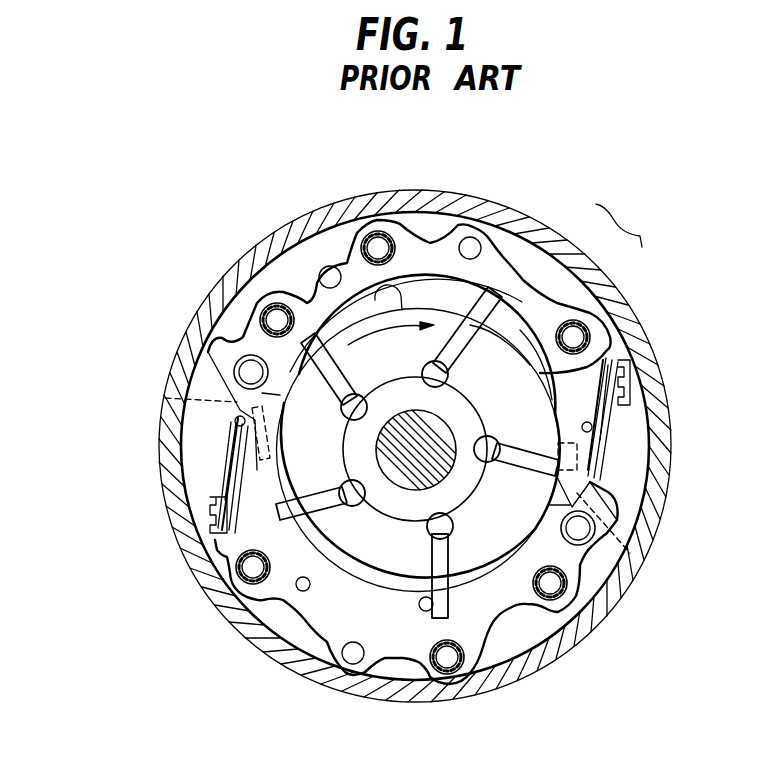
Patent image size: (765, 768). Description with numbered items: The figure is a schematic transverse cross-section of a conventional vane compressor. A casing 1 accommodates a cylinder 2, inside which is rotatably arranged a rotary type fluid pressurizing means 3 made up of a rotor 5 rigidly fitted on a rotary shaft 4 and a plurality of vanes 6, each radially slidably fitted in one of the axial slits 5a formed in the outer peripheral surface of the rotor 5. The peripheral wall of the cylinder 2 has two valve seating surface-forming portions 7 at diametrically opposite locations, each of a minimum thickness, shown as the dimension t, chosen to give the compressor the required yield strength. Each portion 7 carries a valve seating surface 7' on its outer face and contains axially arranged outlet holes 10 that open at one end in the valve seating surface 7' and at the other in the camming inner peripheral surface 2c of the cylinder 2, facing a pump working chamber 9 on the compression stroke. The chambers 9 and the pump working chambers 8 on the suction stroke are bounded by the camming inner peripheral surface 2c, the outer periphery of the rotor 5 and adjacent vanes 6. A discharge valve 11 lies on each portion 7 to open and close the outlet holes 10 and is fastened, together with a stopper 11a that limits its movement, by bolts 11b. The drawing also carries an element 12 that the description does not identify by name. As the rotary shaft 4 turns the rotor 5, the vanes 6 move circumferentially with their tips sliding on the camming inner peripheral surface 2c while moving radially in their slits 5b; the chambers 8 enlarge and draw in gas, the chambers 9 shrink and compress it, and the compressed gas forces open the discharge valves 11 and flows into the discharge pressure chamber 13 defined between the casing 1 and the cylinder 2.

The casing 1 is at (320, 226).
The cylinder 2 is at (307, 308).
The camming inner peripheral surface 2c is at (397, 287).
The rotary type fluid pressurizing means 3 is at (619, 225).
The rotary shaft 4 is at (405, 463).
The rotor 5 is at (545, 370).
The axial slits / outer peripheral surface of the rotor 5a is at (357, 582).
The slits 5b is at (455, 305).
The vanes 6 is at (483, 352).
The valve seating surface-forming portion 7 is at (413, 444).
The valve seating surface 7' is at (422, 446).
The pump working chambers on the suction stroke 8 is at (440, 300).
The pump working chambers on the compression stroke 9 is at (238, 560).
The outlet holes 10 is at (165, 398).
The discharge valve 11 is at (240, 430).
The stopper 11a is at (243, 447).
The bolts 11b is at (210, 525).
The ball bearing 12 is at (363, 302).
The discharge pressure chamber 13 is at (628, 493).
The gap t is at (416, 451).